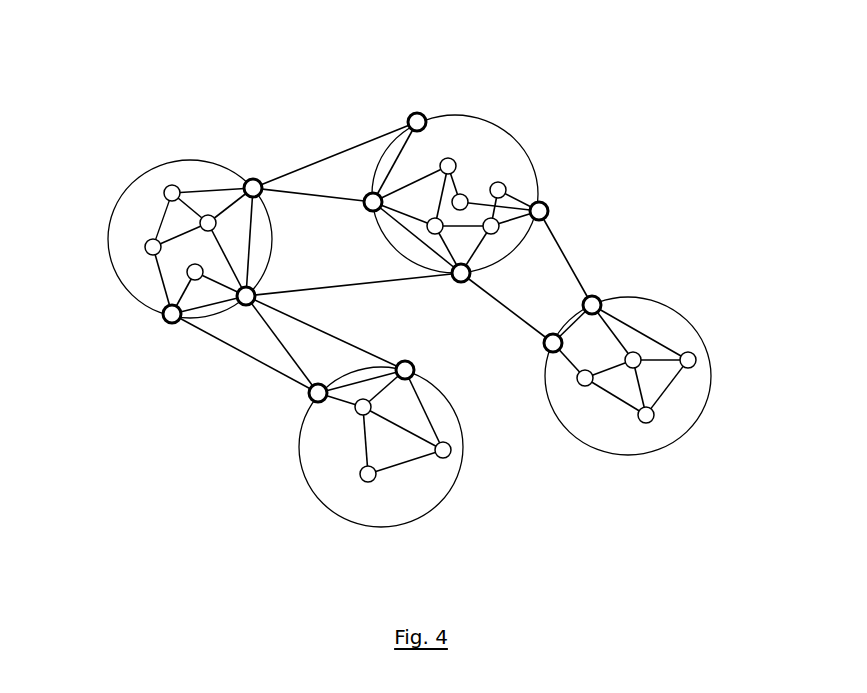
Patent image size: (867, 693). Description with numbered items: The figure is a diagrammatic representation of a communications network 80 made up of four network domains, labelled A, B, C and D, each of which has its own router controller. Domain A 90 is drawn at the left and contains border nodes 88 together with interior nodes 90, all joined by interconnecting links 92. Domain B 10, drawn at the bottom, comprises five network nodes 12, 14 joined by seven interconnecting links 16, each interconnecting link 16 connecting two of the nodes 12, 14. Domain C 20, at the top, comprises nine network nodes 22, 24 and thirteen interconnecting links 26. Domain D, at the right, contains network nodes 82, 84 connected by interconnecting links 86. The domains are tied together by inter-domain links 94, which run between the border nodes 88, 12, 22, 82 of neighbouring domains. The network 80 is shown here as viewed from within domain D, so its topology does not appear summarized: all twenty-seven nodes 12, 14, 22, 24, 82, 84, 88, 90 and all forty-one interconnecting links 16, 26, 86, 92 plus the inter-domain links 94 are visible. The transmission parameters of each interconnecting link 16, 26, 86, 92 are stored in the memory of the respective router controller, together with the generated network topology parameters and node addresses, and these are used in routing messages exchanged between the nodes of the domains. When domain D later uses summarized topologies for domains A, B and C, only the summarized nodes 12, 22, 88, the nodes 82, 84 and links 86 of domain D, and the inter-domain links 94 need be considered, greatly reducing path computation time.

The communications network domain 10 is at (408, 455).
The network node 12 is at (414, 365).
The network node 14 is at (452, 450).
The interconnecting link 16 is at (430, 415).
The communications network domain 20 is at (503, 172).
The network node 22 is at (418, 112).
The network node 24 is at (508, 187).
The interconnecting link 26 is at (540, 203).
The communications network 80 is at (406, 320).
The network node 82 is at (599, 297).
The network node 84 is at (697, 358).
The interconnecting link 86 is at (667, 388).
The network node 88 is at (253, 178).
The communications network domain 90 is at (146, 252).
The interconnecting link 92 is at (163, 220).
The inter-domain link 94 is at (341, 150).